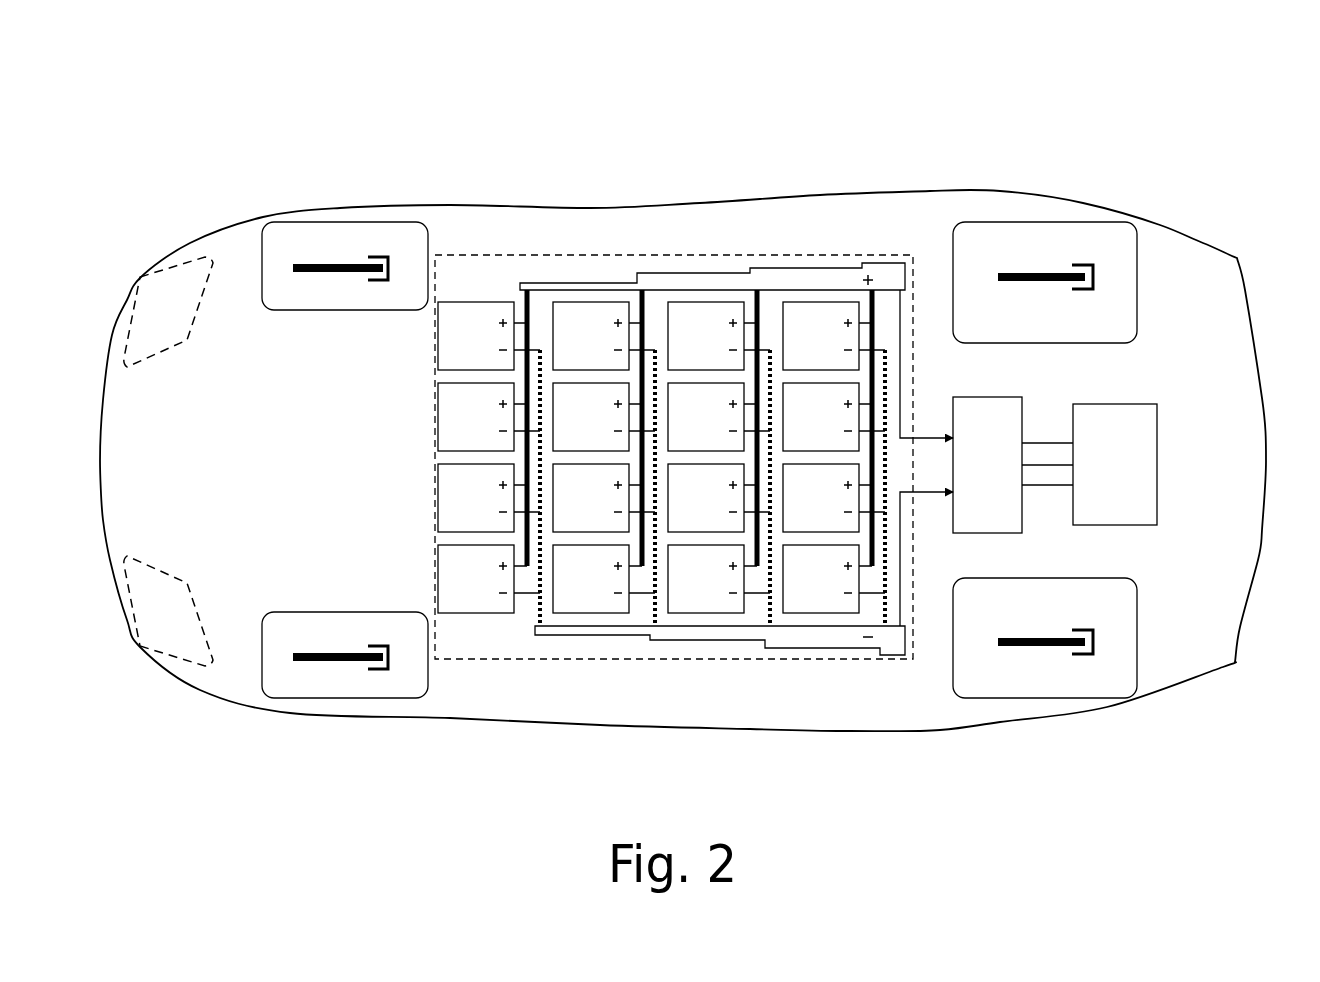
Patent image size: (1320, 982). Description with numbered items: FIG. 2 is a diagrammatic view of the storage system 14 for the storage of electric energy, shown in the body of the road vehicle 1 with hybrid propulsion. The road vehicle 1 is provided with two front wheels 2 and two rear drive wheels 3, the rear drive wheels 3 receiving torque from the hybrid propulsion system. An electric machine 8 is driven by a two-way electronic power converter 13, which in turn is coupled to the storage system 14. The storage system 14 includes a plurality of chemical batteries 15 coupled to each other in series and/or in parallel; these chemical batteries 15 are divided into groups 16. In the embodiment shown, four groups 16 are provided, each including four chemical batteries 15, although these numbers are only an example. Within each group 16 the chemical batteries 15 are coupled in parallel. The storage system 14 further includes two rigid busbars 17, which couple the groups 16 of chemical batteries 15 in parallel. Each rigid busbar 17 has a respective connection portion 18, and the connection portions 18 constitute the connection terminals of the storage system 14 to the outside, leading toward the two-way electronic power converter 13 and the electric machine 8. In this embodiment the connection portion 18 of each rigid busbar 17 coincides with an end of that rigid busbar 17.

The road vehicle 1 is at (1203, 747).
The front wheels 2 is at (343, 237).
The rear drive wheels 3 is at (1047, 237).
The electric machine 8 is at (1115, 464).
The two-way electronic power converter 13 is at (1013, 465).
The storage system 14 is at (660, 108).
The chemical batteries 15 is at (661, 457).
The groups 16 is at (500, 240).
The rigid busbars 17 is at (705, 283).
The connection portions 18 is at (887, 272).